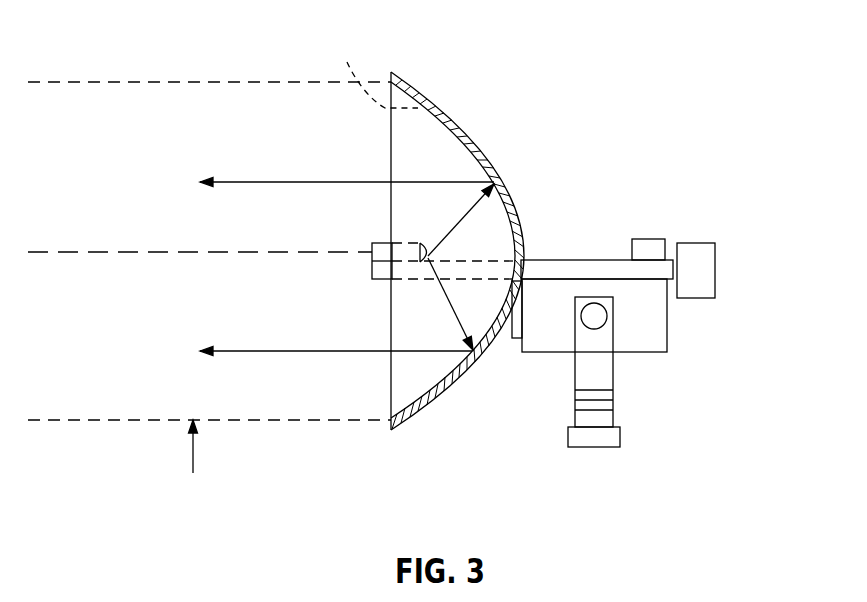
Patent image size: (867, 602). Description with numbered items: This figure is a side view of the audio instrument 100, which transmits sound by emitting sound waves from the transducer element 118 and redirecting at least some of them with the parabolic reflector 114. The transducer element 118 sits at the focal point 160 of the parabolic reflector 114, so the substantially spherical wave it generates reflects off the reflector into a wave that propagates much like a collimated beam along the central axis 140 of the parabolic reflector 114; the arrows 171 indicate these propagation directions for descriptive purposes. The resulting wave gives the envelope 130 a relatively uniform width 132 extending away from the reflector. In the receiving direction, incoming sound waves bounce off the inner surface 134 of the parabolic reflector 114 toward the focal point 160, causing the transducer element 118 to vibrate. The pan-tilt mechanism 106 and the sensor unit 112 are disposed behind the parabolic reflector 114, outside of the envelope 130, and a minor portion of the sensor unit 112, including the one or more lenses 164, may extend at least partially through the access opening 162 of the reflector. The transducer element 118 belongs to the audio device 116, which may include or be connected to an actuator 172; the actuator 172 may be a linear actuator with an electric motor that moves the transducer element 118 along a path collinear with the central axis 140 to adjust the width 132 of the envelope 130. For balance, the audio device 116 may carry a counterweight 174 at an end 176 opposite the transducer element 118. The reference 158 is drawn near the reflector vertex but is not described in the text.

The audio instrument 100 is at (535, 103).
The pan-tilt mechanism 106 is at (602, 373).
The sensor unit 112 is at (653, 330).
The parabolic reflector 114 is at (424, 97).
The audio device 116 is at (372, 269).
The transducer element 118 is at (422, 243).
The envelope 130 is at (243, 133).
The width 132 is at (193, 82).
The inner surface 134 is at (370, 69).
The central axis 140 is at (103, 252).
The reflector vertex 158 is at (527, 258).
The focal point 160 is at (428, 243).
The access opening 162 is at (493, 352).
The lenses 164 is at (505, 322).
The arrows 171 is at (282, 182).
The actuator 172 is at (647, 248).
The counterweight 174 is at (687, 255).
The end 176 is at (718, 240).